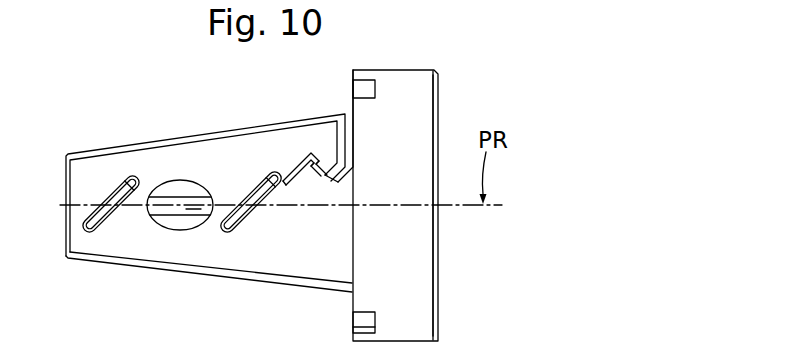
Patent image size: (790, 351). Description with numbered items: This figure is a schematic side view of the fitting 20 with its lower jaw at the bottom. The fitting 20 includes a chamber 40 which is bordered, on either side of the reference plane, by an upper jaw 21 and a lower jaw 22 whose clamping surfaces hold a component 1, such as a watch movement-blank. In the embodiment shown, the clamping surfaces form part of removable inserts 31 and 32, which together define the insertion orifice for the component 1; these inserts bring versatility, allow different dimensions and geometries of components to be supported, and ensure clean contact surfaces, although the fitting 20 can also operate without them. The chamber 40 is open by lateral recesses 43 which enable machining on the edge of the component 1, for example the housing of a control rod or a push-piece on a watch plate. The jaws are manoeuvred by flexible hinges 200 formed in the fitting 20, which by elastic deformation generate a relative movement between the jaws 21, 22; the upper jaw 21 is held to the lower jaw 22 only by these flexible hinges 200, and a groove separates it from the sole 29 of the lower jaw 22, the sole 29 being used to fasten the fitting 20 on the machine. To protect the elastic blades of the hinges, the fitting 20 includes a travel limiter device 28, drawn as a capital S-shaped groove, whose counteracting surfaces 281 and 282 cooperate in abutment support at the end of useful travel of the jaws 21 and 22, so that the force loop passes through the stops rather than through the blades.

The component 1 is at (196, 216).
The fitting 20 is at (450, 110).
The upper jaw 21 is at (124, 172).
The lower jaw 22 is at (203, 253).
The travel limiter device 28 is at (348, 193).
The sole 29 is at (413, 297).
The removable insert 31 is at (182, 186).
The removable insert 32 is at (173, 223).
The chamber 40 is at (165, 171).
The lateral recess 43 is at (206, 182).
The flexible hinge 200 is at (247, 168).
The counteracting surface 281 is at (314, 187).
The counteracting surface 282 is at (328, 166).